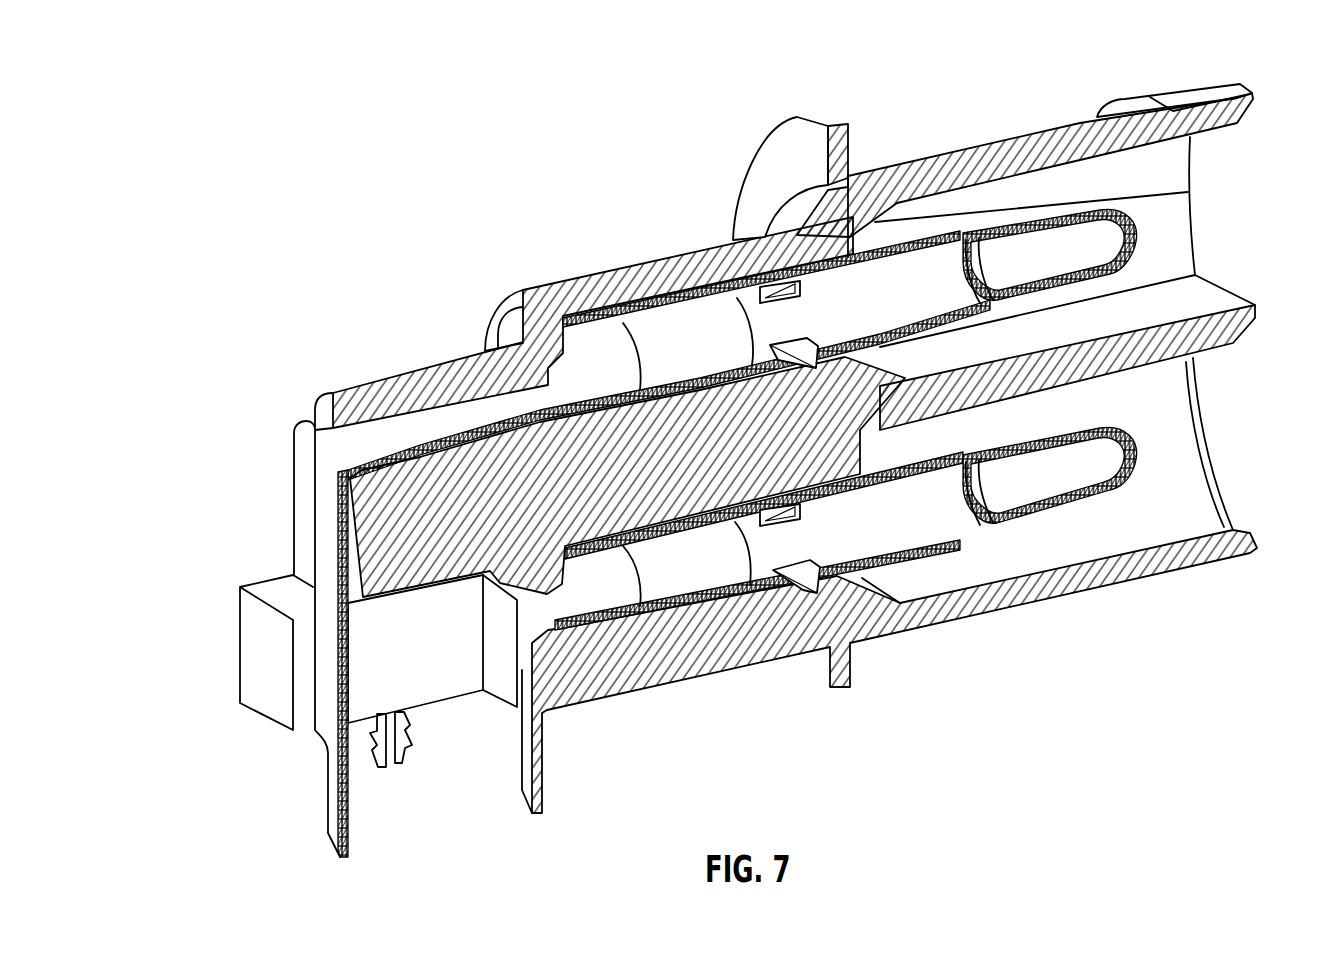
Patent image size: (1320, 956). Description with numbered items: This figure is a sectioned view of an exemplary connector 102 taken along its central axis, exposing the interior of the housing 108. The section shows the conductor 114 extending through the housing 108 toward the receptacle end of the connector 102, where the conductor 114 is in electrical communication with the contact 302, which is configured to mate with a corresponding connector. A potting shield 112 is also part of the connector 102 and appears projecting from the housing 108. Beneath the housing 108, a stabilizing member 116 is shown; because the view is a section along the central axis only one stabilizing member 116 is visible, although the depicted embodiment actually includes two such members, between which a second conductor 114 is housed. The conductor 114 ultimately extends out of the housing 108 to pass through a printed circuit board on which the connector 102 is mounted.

The connector 102 is at (716, 456).
The housing 108 is at (441, 386).
The potting shield 112 is at (777, 158).
The conductor 114 is at (345, 456).
The stabilizing member 116 is at (262, 652).
The contact 302 is at (1137, 455).